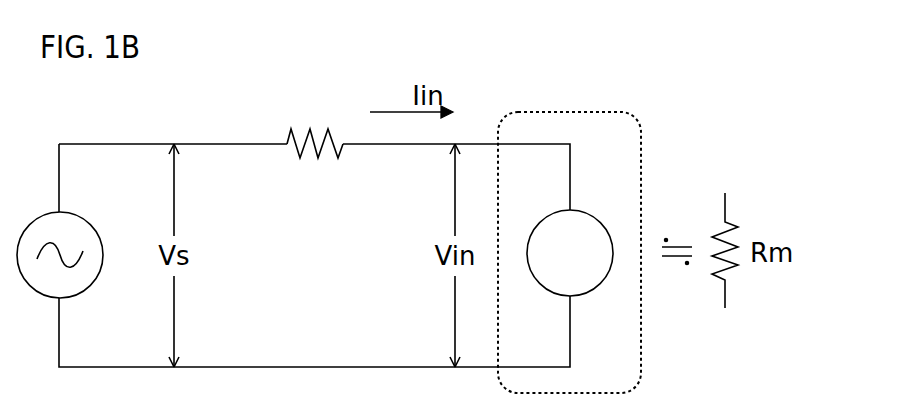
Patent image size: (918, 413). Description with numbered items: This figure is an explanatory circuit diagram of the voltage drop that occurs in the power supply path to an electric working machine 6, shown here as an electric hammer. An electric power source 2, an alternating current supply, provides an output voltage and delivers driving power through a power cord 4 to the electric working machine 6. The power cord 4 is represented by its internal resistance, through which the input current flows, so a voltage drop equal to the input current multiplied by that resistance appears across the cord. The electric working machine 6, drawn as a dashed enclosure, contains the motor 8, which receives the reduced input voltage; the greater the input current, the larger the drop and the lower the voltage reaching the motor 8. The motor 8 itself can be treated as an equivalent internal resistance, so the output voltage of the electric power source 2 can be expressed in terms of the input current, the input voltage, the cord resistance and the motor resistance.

The electric power source 2 is at (88, 228).
The power cord 4 is at (340, 112).
The electric working machine 6 is at (569, 112).
The motor 8 is at (590, 218).